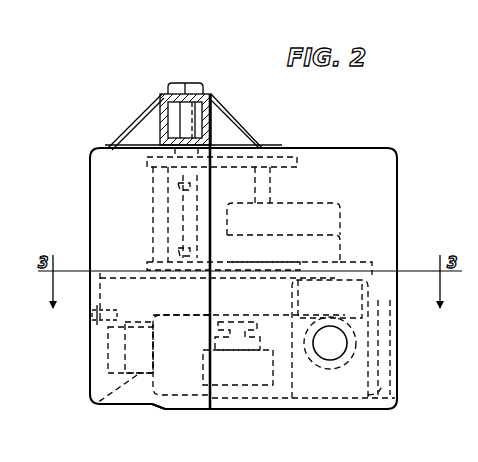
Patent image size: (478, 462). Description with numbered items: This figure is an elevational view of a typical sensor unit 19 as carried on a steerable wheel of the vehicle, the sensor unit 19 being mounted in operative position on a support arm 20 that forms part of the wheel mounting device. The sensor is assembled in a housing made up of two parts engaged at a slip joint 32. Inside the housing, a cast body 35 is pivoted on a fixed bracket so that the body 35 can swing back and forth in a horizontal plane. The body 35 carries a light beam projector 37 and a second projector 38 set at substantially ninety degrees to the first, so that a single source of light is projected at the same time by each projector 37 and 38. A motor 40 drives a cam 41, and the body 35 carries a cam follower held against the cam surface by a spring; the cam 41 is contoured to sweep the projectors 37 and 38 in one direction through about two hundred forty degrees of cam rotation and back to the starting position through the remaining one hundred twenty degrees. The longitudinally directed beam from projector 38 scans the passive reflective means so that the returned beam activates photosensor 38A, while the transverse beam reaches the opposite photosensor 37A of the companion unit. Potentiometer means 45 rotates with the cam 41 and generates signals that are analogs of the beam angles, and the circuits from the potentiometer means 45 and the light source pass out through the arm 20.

The sensor unit 19 is at (325, 140).
The support arm 20 is at (212, 114).
The slip joint 32 is at (176, 412).
The cast body 35 is at (395, 337).
The light beam projector 37 is at (83, 412).
The photosensor 37A is at (80, 326).
The second projector 38 is at (392, 386).
The photosensor 38A is at (330, 312).
The motor 40 is at (316, 203).
The cam 41 is at (182, 312).
The potentiometer means 45 is at (256, 400).